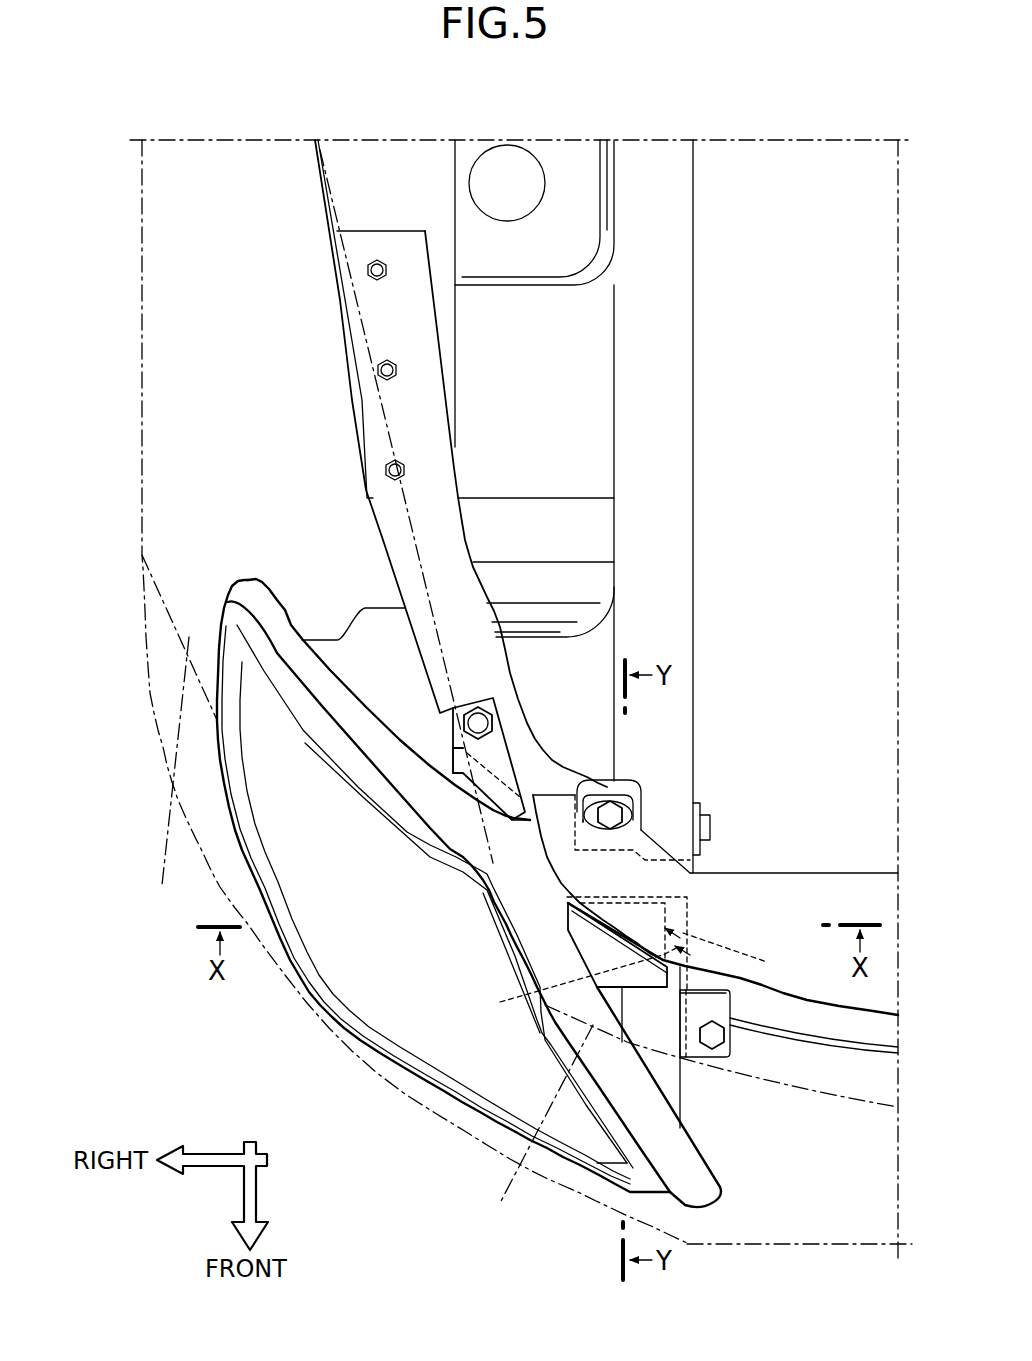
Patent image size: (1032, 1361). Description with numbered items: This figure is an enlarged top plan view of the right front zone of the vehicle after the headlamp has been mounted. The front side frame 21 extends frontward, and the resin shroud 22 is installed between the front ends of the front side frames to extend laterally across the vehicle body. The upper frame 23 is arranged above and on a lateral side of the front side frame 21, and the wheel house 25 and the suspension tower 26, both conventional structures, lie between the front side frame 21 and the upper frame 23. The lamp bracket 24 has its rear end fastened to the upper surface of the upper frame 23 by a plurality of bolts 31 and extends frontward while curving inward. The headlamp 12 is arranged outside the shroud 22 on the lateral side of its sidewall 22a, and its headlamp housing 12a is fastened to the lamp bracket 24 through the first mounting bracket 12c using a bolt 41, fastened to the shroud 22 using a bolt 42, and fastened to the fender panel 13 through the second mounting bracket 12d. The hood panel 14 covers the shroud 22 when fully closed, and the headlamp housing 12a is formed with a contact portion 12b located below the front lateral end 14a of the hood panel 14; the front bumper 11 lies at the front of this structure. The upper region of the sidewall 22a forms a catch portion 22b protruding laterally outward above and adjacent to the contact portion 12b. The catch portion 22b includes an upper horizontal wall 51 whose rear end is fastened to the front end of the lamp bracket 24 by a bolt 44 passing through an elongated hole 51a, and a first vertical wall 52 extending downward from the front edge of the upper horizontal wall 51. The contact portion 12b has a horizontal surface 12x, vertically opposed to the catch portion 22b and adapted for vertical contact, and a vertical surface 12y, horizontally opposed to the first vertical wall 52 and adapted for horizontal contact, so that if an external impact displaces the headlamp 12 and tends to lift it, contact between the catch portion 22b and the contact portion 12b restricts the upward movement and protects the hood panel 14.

The front bumper 11 is at (428, 1093).
The headlamp 12 is at (360, 983).
The headlamp housing 12a is at (672, 1087).
The contact portion 12b is at (733, 978).
The first mounting bracket 12c is at (458, 771).
The second mounting bracket 12d is at (718, 1008).
The horizontal surface 12x is at (633, 922).
The vertical surface 12y is at (627, 940).
The fender panel 13 is at (168, 778).
The hood panel 14 is at (692, 1119).
The front lateral end 14a is at (545, 1027).
The front side frame 21 is at (682, 576).
The shroud 22 is at (793, 890).
The sidewall 22a is at (562, 981).
The catch portion 22b is at (660, 838).
The upper frame 23 is at (330, 192).
The lamp bracket 24 is at (395, 583).
The wheel house 25 is at (582, 397).
The suspension tower 26 is at (592, 202).
The bolt 31 is at (367, 270).
The bolt 41 is at (463, 720).
The bolt 42 is at (718, 1035).
The bolt 44 is at (607, 806).
The upper horizontal wall 51 is at (556, 792).
The elongated hole 51a is at (583, 824).
The first vertical wall 52 is at (530, 857).